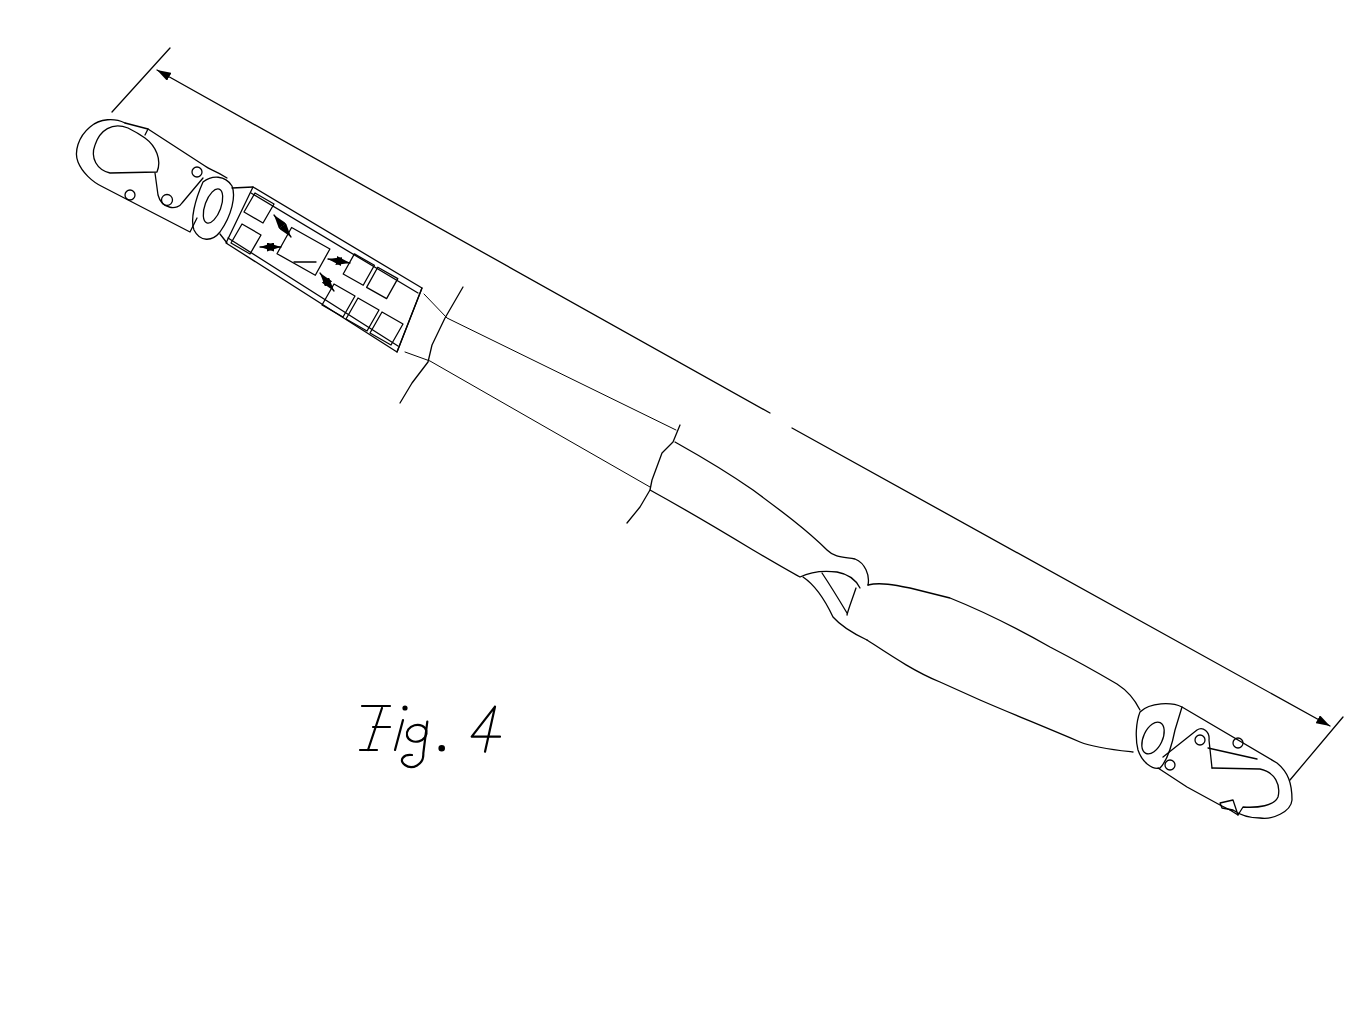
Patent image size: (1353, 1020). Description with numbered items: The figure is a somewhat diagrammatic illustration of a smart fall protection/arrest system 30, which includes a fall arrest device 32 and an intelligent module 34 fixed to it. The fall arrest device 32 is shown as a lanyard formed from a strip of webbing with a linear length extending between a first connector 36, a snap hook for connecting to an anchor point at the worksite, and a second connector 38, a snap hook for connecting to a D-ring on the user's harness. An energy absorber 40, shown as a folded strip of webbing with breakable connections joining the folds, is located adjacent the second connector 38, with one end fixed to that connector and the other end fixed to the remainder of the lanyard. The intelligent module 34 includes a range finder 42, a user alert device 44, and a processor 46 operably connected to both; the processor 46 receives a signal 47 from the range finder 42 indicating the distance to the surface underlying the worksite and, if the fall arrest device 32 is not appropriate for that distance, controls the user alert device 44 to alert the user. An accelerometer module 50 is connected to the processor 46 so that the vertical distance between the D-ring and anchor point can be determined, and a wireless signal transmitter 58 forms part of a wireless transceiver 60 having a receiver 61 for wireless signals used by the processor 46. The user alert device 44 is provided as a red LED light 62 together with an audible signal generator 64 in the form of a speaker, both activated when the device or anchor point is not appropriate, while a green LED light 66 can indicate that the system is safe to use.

The smart fall protection/arrest system 30 is at (466, 546).
The fall arrest device 32 is at (718, 535).
The intelligent module 34 is at (291, 295).
The first connector 36 is at (100, 188).
The second connector 38 is at (1163, 778).
The energy absorber 40 is at (940, 683).
The range finder 42 is at (245, 246).
The user alert device 44 is at (403, 313).
The processor 46 is at (313, 260).
The signal 47 is at (258, 279).
The accelerometer module 50 is at (262, 206).
The wireless signal transmitter 58 is at (361, 272).
The wireless transceiver 60 is at (409, 285).
The receiver 61 is at (386, 288).
The red LED light 62 is at (336, 303).
The audible signal generator 64 is at (364, 316).
The green LED light 66 is at (388, 330).